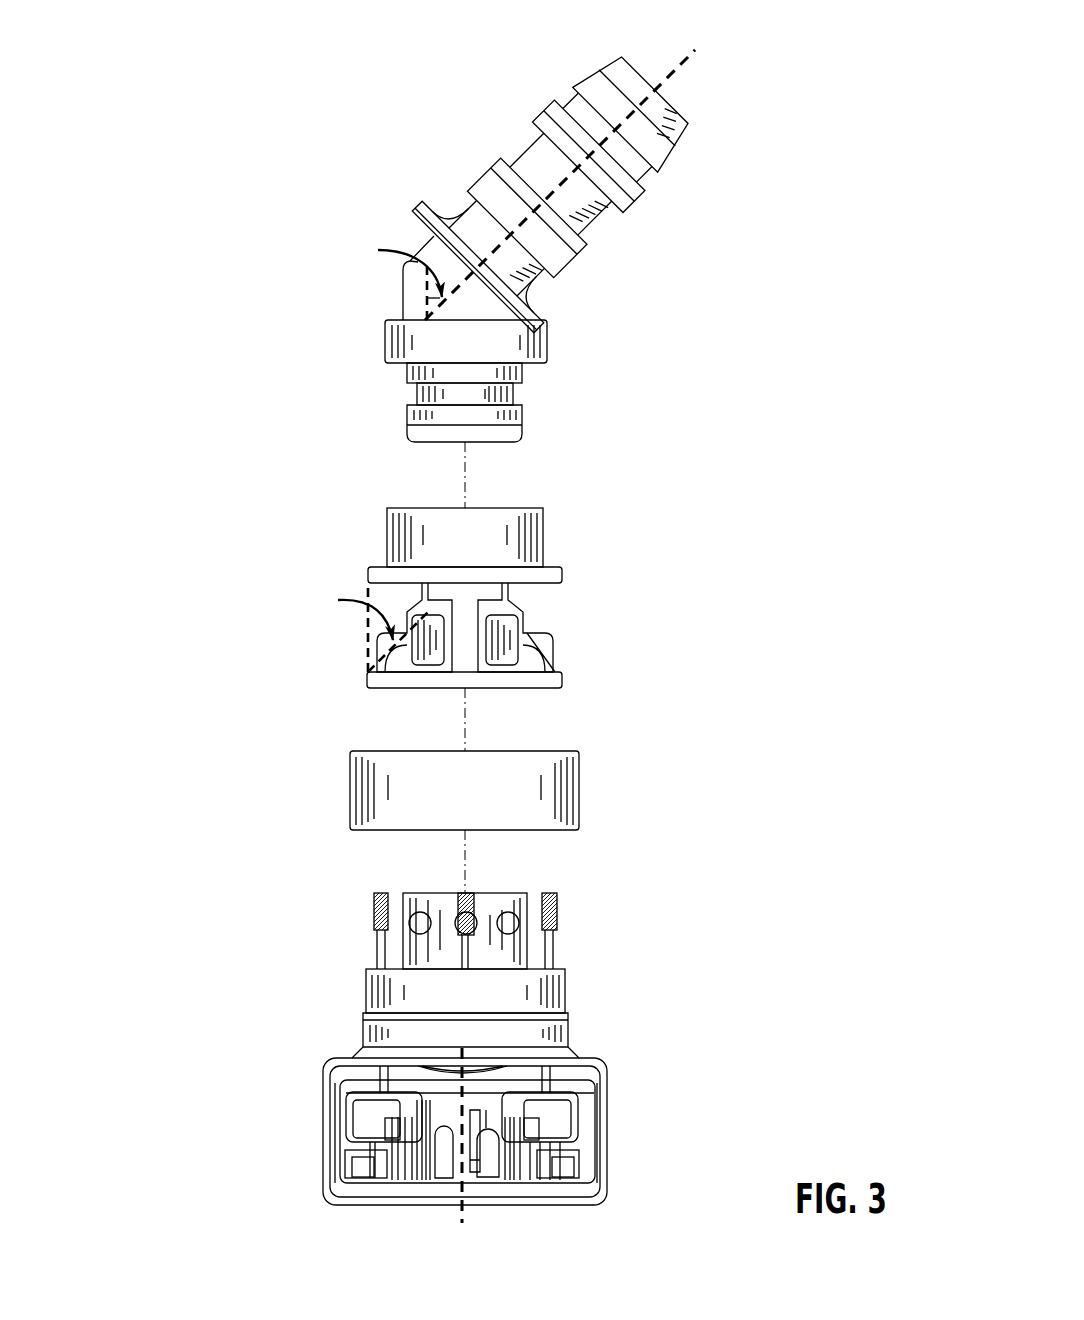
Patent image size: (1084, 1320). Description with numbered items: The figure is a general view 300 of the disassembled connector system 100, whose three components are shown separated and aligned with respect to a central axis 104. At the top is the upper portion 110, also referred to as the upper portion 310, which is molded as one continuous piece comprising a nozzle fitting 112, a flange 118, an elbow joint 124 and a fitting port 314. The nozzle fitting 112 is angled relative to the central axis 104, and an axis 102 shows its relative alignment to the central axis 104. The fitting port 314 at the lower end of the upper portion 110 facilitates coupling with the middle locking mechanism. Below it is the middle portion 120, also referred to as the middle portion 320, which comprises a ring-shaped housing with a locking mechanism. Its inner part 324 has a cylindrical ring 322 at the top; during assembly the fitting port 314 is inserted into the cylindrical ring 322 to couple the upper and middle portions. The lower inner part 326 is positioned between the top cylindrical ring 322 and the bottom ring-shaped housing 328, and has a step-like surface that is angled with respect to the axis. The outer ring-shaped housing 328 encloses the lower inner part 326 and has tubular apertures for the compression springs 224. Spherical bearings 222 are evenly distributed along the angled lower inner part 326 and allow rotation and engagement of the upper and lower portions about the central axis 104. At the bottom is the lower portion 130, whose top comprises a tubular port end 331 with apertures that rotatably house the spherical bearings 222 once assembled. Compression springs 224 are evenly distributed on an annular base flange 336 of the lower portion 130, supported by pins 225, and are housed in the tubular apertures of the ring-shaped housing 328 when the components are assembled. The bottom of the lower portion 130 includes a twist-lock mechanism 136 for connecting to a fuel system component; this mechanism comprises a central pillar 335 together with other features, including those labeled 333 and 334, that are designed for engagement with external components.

The general view 300 is at (768, 44).
The connector system 100 is at (762, 172).
The axis 102 is at (676, 66).
The central axis 104 is at (463, 1208).
The upper portion 110 is at (519, 254).
The upper portion 310 is at (607, 311).
The nozzle fitting 112 is at (490, 128).
The flange 118 is at (415, 211).
The elbow joint 124 is at (403, 312).
The fitting port 314 is at (390, 402).
The middle portion 120 is at (497, 635).
The middle portion 320 is at (598, 658).
The cylindrical ring 322 is at (545, 540).
The inner part 324 is at (350, 632).
The lower inner part 326 is at (550, 634).
The ring-shaped housing 328 is at (580, 795).
The lower portion 130 is at (632, 988).
The port end 331 is at (485, 893).
The spherical bearings 222 is at (418, 923).
The compression springs 224 is at (558, 913).
The pins 225 is at (552, 943).
The annular base flange 336 is at (368, 1005).
The twist-lock mechanism 136 is at (610, 1148).
The latch recess 333 is at (360, 1117).
The latch member 334 is at (408, 1162).
The central pillar 335 is at (474, 1153).